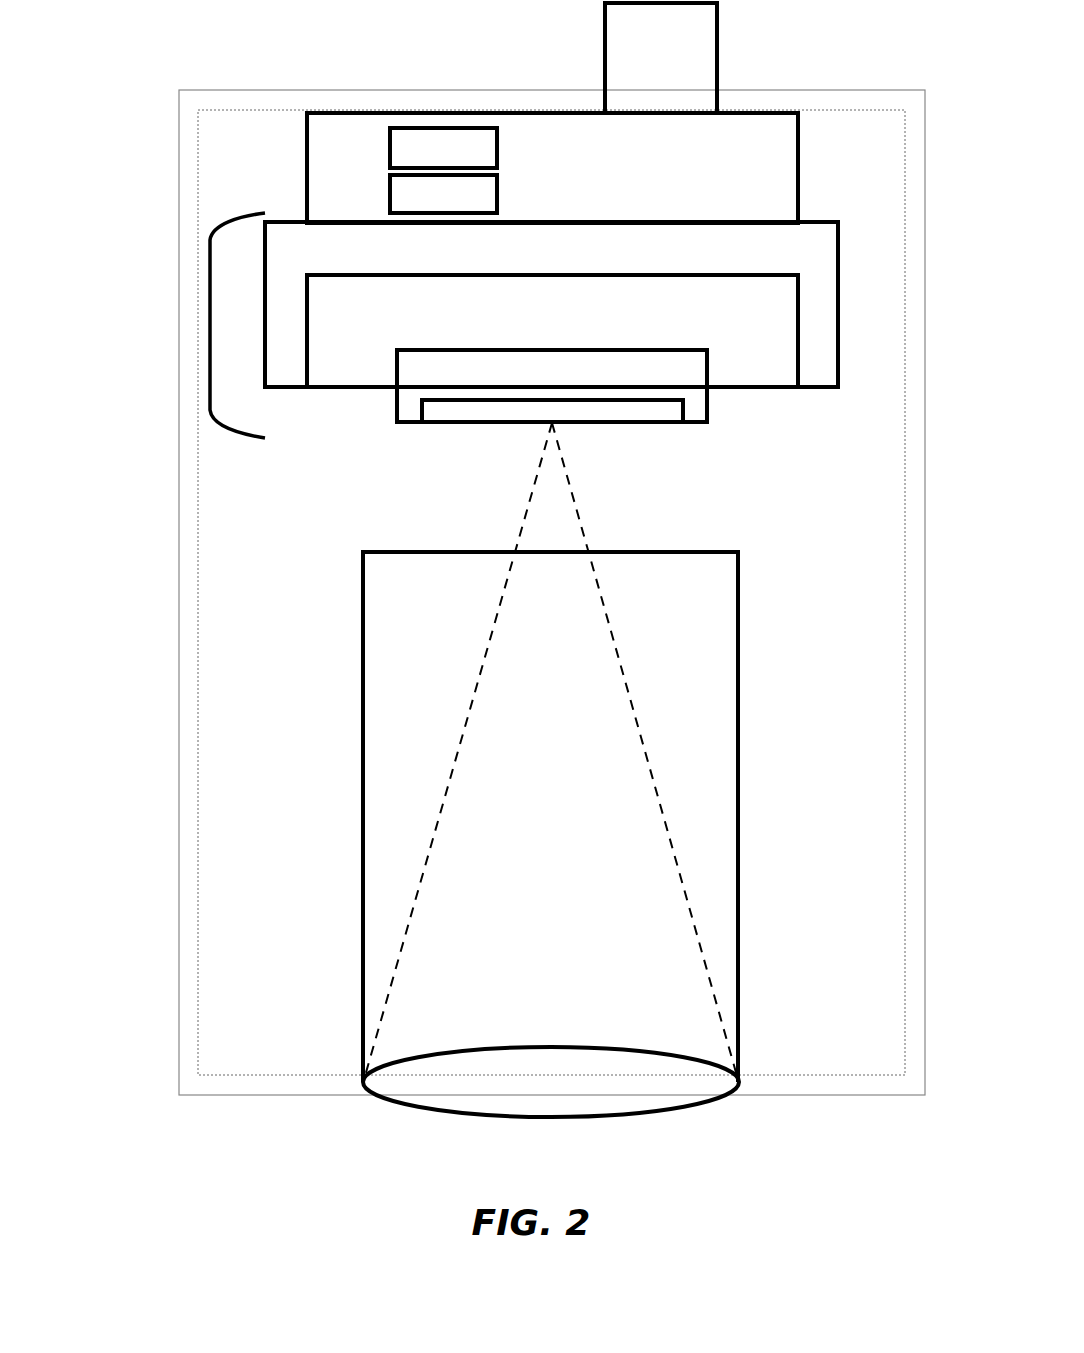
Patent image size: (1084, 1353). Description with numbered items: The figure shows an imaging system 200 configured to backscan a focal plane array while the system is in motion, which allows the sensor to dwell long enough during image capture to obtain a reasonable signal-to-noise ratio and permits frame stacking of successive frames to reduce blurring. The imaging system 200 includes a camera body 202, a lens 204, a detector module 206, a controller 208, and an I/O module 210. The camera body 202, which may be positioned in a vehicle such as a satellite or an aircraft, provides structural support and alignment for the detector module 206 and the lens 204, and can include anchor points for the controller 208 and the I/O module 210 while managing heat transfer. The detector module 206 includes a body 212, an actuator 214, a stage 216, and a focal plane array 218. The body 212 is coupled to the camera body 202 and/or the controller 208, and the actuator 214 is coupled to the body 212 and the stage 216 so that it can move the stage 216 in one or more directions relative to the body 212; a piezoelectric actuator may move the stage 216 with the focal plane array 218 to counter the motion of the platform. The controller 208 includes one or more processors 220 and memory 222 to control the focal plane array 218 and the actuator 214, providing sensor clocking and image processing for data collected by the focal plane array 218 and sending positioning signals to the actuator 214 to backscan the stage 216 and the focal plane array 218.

The imaging system 200 is at (92, 174).
The camera body 202 is at (232, 102).
The lens 204 is at (718, 572).
The detector module 206 is at (210, 327).
The controller 208 is at (323, 147).
The I/O module 210 is at (642, 71).
The body 212 is at (479, 257).
The actuator 214 is at (504, 329).
The stage 216 is at (526, 398).
The focal plane array 218 is at (597, 413).
The processors 220 is at (424, 159).
The memory 222 is at (424, 206).